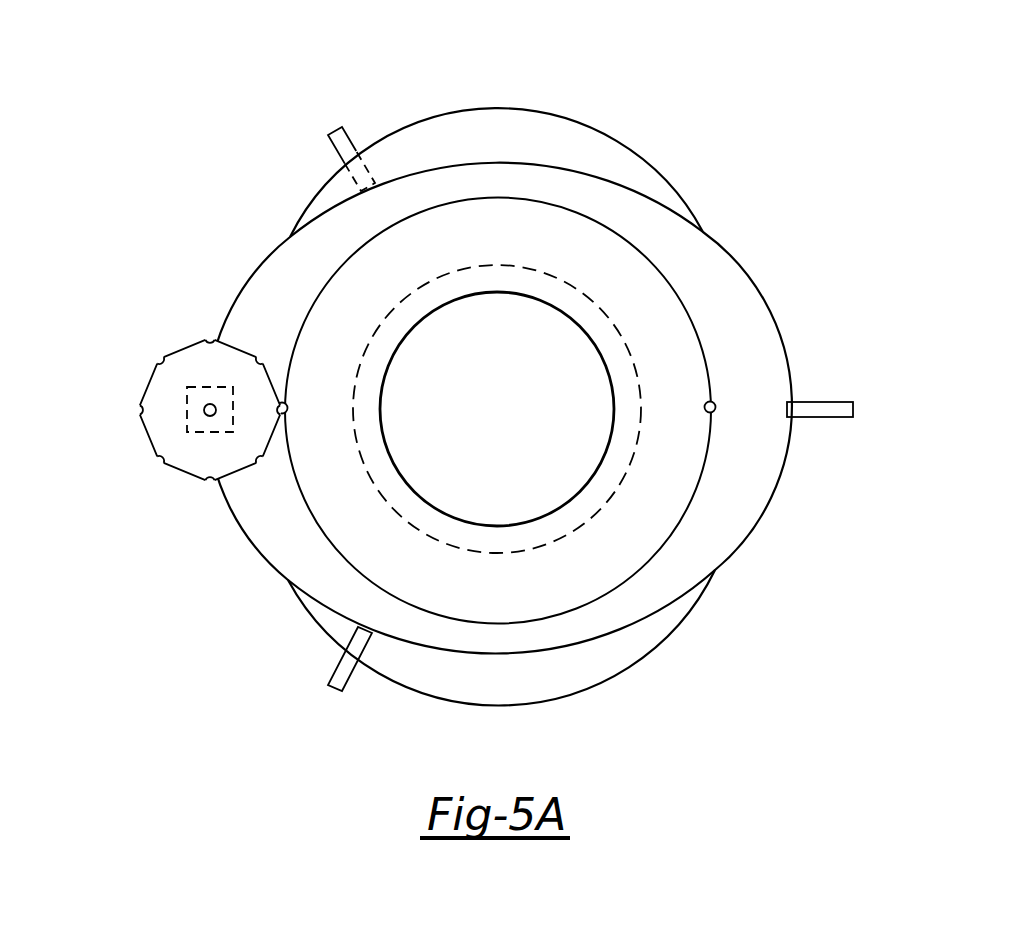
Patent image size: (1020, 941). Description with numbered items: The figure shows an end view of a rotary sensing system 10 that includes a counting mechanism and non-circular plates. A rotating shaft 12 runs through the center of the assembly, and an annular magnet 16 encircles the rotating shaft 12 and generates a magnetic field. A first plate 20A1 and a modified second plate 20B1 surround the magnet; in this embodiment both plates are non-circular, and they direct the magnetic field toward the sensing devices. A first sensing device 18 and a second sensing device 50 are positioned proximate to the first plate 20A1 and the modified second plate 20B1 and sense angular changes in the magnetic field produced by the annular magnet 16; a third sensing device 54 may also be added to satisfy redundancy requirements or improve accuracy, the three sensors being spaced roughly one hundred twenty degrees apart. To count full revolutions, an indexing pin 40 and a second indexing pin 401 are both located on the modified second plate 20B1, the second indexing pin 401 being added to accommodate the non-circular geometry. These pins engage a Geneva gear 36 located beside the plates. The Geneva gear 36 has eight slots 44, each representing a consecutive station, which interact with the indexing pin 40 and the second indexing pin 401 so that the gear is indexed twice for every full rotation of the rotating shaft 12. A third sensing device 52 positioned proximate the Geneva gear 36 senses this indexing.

The rotary sensing system 10 is at (703, 113).
The rotating shaft 12 is at (497, 292).
The annular magnet 16 is at (618, 488).
The first sensing device 18 is at (338, 664).
The first plate 20A1 is at (243, 532).
The modified second plate 20B1 is at (735, 264).
The Geneva gear 36 is at (140, 437).
The indexing pin 40 is at (290, 405).
The second indexing pin 401 is at (716, 409).
The slots 44 is at (157, 360).
The second sensing device 50 is at (823, 401).
The third sensing device 52 is at (196, 433).
The third sensing device 54 is at (335, 138).